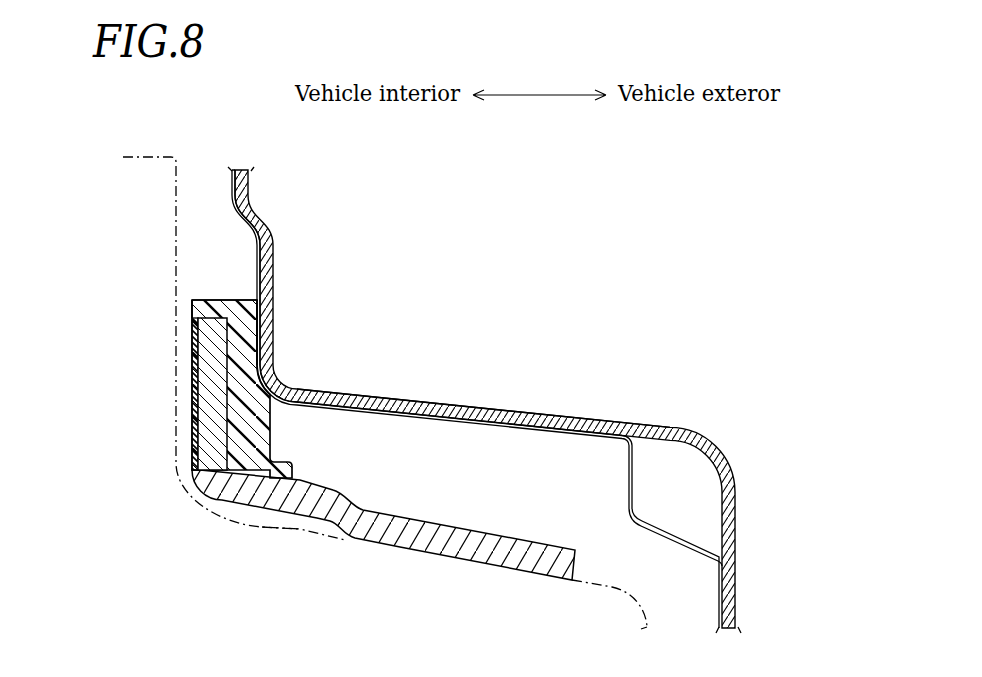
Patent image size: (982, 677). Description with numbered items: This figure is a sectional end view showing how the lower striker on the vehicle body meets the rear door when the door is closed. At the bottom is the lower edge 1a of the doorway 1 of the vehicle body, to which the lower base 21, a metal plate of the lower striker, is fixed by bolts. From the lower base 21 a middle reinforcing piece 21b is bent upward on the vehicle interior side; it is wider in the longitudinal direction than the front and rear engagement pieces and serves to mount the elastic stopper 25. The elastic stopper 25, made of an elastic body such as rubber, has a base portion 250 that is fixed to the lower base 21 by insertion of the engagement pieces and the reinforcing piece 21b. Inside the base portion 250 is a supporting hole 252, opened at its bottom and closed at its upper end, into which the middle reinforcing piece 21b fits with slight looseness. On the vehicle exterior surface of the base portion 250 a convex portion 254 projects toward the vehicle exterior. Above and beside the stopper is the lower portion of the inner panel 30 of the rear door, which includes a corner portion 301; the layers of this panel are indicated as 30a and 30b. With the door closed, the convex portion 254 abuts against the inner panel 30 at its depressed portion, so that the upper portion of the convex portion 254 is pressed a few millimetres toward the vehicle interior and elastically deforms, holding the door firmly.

The doorway 1 is at (363, 376).
The lower edge 1a is at (295, 530).
The lower base 21 is at (339, 483).
The middle reinforcing piece 21b is at (194, 352).
The elastic stopper 25 is at (229, 348).
The base portion 250 is at (206, 299).
The supporting hole 252 is at (196, 330).
The convex portion 254 is at (305, 315).
The inner panel 30 is at (467, 364).
The thin film layer of seal member 30a is at (222, 209).
The base layer of seal member 30b is at (266, 216).
The corner portion 301 is at (291, 382).